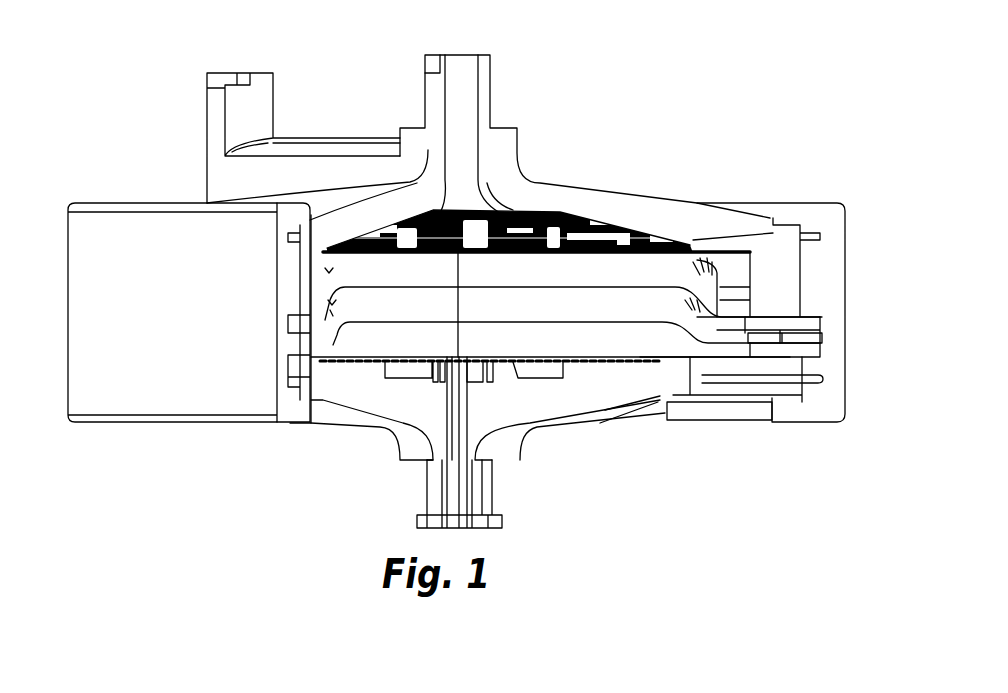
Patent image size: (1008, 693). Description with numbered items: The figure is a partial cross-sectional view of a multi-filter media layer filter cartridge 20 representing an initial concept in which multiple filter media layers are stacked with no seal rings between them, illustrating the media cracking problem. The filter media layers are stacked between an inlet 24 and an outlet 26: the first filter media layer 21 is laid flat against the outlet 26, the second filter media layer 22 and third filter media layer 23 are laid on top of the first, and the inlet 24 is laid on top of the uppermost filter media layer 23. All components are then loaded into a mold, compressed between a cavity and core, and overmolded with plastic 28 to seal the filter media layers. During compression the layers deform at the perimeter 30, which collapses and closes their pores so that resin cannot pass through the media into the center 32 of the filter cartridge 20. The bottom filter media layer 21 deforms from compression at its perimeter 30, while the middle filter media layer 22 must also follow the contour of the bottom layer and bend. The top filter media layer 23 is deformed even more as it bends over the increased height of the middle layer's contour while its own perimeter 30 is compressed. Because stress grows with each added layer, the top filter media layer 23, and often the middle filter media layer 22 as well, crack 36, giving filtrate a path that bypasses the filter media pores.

The multi-filter media layer filter cartridge 20 is at (481, 291).
The first filter media layer 21 is at (633, 343).
The second filter media layer 22 is at (650, 303).
The third filter media layer 23 is at (648, 268).
The inlet 24 is at (548, 215).
The outlet 26 is at (612, 378).
The plastic 28 is at (830, 290).
The perimeter 30 is at (815, 336).
The center 32 is at (585, 300).
The crack 36 is at (720, 270).